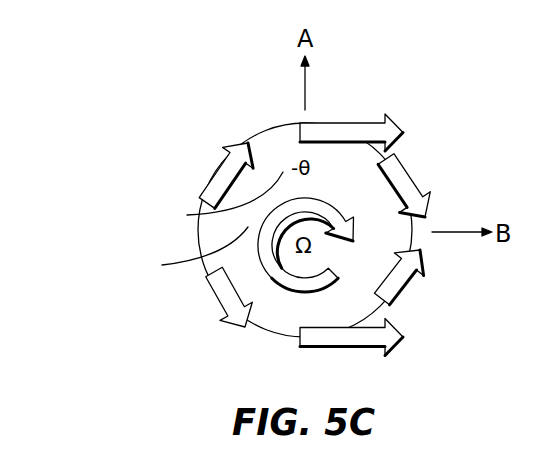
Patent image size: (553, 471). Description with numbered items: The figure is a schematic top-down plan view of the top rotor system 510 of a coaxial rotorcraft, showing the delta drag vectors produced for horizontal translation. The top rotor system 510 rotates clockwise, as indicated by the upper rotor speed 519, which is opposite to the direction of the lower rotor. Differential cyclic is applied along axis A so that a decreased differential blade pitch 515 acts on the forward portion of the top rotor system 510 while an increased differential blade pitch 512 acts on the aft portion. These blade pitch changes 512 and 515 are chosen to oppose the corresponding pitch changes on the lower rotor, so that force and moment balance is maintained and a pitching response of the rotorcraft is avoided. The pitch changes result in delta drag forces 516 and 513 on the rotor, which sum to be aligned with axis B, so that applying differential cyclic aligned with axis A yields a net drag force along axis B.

The top rotor system 510 is at (198, 50).
The increased differential blade pitch 512 is at (295, 320).
The delta drag force 513 is at (333, 349).
The decreased differential blade pitch 515 is at (213, 200).
The delta drag force 516 is at (233, 153).
The upper rotor speed 519 is at (183, 252).